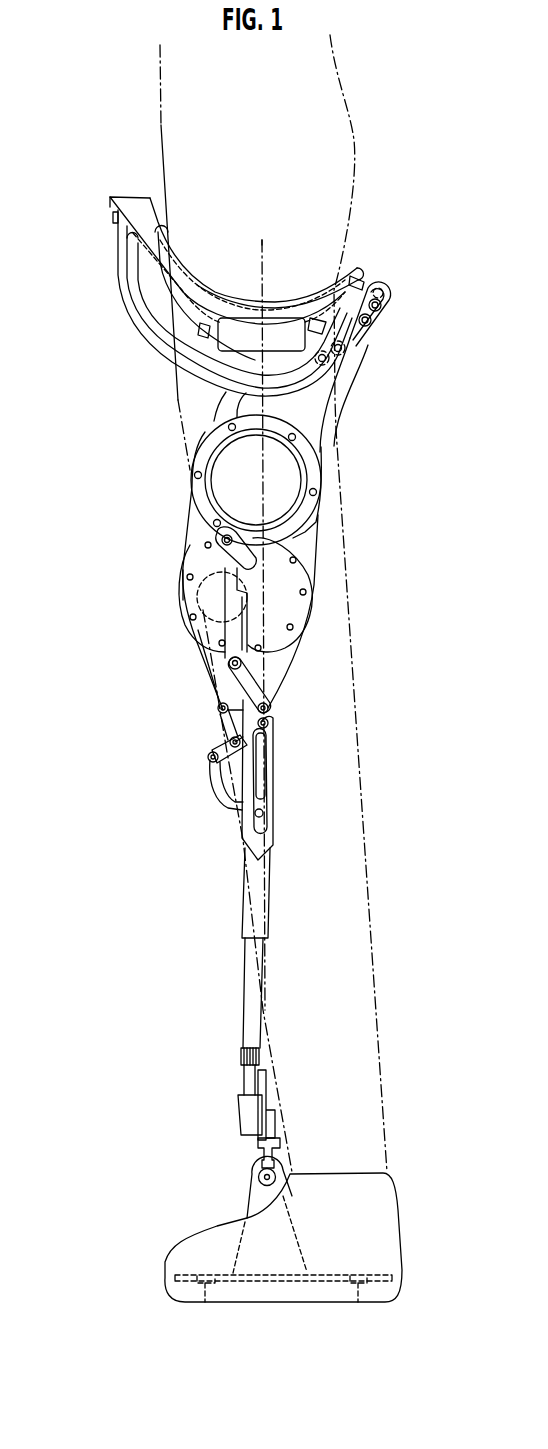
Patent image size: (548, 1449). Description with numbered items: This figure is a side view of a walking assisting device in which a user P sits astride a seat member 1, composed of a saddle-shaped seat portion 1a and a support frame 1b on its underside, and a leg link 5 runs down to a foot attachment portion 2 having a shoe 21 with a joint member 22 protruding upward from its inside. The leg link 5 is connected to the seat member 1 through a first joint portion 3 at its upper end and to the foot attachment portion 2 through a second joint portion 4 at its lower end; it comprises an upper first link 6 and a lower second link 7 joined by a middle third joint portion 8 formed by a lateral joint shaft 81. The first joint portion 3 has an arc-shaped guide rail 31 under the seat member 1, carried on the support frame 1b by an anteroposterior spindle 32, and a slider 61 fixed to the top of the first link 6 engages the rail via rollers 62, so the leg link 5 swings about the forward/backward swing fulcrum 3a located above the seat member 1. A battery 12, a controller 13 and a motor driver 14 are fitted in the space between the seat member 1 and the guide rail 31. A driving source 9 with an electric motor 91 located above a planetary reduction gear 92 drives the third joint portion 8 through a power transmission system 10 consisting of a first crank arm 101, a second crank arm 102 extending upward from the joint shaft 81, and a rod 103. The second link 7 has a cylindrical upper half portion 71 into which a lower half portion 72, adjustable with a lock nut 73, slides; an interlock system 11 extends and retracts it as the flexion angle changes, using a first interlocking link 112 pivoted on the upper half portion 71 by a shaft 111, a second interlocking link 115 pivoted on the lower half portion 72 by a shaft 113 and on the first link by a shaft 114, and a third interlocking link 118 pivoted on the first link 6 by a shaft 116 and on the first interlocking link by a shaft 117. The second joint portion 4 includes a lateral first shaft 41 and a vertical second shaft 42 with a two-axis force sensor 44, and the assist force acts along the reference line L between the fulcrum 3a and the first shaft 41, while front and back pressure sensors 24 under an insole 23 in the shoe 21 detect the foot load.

The seat member 1 is at (193, 263).
The seat portion 1a is at (280, 299).
The support frame 1b is at (170, 318).
The foot attachment portion 2 is at (190, 1229).
The first joint portion 3 is at (108, 263).
The forward/backward swing fulcrum 3a is at (260, 245).
The second joint portion 4 is at (228, 1115).
The leg link 5 is at (190, 655).
The first link 6 is at (187, 525).
The second link 7 is at (180, 895).
The third joint portion 8 is at (280, 698).
The driving source 9 is at (325, 491).
The power transmission system 10 is at (218, 592).
The interlock system 11 is at (203, 782).
The battery 12 is at (246, 324).
The controller 13 is at (180, 280).
The motor driver 14 is at (363, 318).
The shoe 21 is at (375, 1229).
The joint member 22 is at (252, 1192).
The insole 23 is at (193, 1272).
The pressure sensor 24 is at (363, 1323).
The guide rail 31 is at (167, 355).
The spindle 32 is at (112, 215).
The first shaft 41 is at (279, 1174).
The second shaft 42 is at (284, 1146).
The force sensor 44 is at (265, 1083).
The slider 61 is at (338, 360).
The roller 62 is at (373, 322).
The upper half portion 71 is at (244, 905).
The lower half portion 72 is at (246, 958).
The lock nut 73 is at (242, 1053).
The joint shaft 81 is at (270, 707).
The electric motor 91 is at (273, 473).
The reduction gear 92 is at (280, 605).
The first crank arm 101 is at (205, 561).
The second crank arm 102 is at (248, 682).
The rod 103 is at (222, 613).
The shaft 111 is at (272, 727).
The first interlocking link 112 is at (208, 757).
The shaft 113 is at (262, 814).
The shaft 114 is at (212, 760).
The second interlocking link 115 is at (222, 803).
The shaft 116 is at (217, 709).
The shaft 117 is at (268, 757).
The third interlocking link 118 is at (230, 740).
The reference line L is at (268, 610).
The user P is at (352, 137).